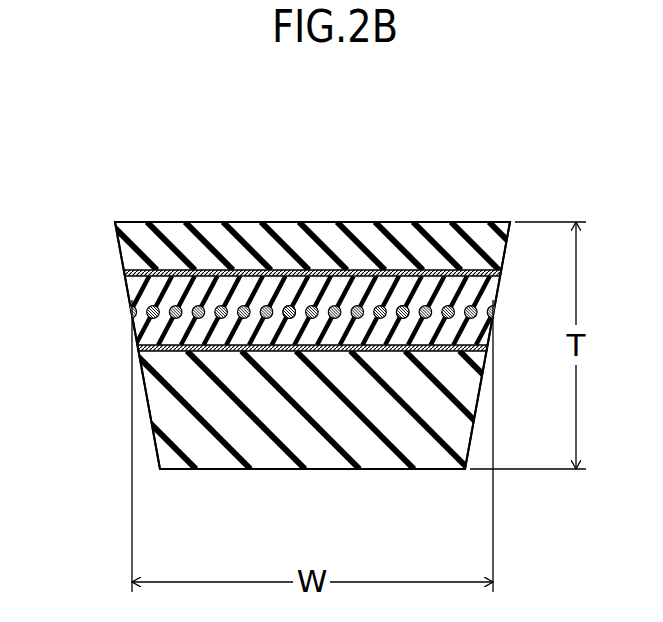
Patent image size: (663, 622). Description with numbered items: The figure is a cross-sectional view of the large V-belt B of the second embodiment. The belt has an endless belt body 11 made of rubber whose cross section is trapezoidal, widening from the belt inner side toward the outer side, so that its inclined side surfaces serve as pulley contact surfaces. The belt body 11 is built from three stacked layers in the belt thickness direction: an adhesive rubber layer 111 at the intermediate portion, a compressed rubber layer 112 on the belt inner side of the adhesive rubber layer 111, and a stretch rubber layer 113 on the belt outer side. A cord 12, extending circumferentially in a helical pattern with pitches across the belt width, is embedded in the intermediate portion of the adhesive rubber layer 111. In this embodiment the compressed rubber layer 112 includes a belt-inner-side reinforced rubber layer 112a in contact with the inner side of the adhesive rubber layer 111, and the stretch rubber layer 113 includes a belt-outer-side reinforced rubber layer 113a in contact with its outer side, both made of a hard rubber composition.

The large V-belt B is at (288, 148).
The belt body 11 is at (157, 222).
The adhesive rubber layer 111 is at (133, 292).
The compressed rubber layer 112 is at (270, 470).
The belt-inner-side reinforced rubber layer 112a is at (385, 352).
The stretch rubber layer 113 is at (243, 222).
The belt-outer-side reinforced rubber layer 113a is at (438, 272).
The cord 12 is at (403, 305).